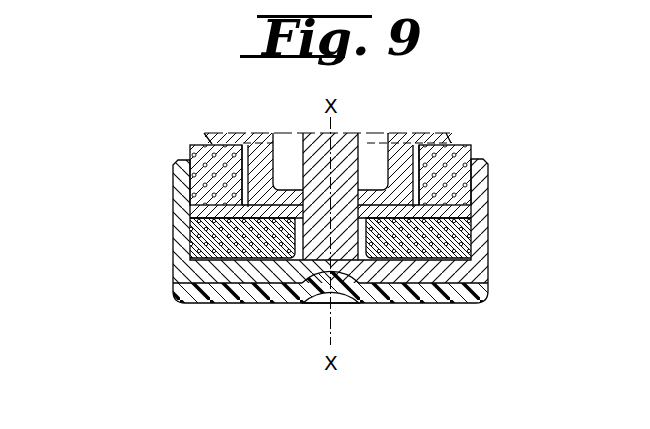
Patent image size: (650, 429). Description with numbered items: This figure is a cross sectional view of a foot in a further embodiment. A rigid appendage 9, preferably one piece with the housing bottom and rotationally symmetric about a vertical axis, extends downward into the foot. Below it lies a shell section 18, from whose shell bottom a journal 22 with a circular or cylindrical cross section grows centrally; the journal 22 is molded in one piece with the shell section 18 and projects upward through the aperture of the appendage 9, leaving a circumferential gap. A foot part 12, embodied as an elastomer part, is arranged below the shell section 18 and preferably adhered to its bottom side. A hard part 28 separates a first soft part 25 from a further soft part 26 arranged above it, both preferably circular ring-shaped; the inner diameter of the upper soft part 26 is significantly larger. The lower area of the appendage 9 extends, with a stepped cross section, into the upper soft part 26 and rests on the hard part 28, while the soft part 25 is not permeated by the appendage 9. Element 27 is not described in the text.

The appendage 9 is at (260, 177).
The foot part 12 is at (222, 296).
The shell section 18 is at (150, 199).
The journal 22 is at (317, 167).
The first soft part 25 is at (449, 239).
The further soft part 26 is at (193, 152).
The gap 27 is at (249, 206).
The hard part 28 is at (456, 209).